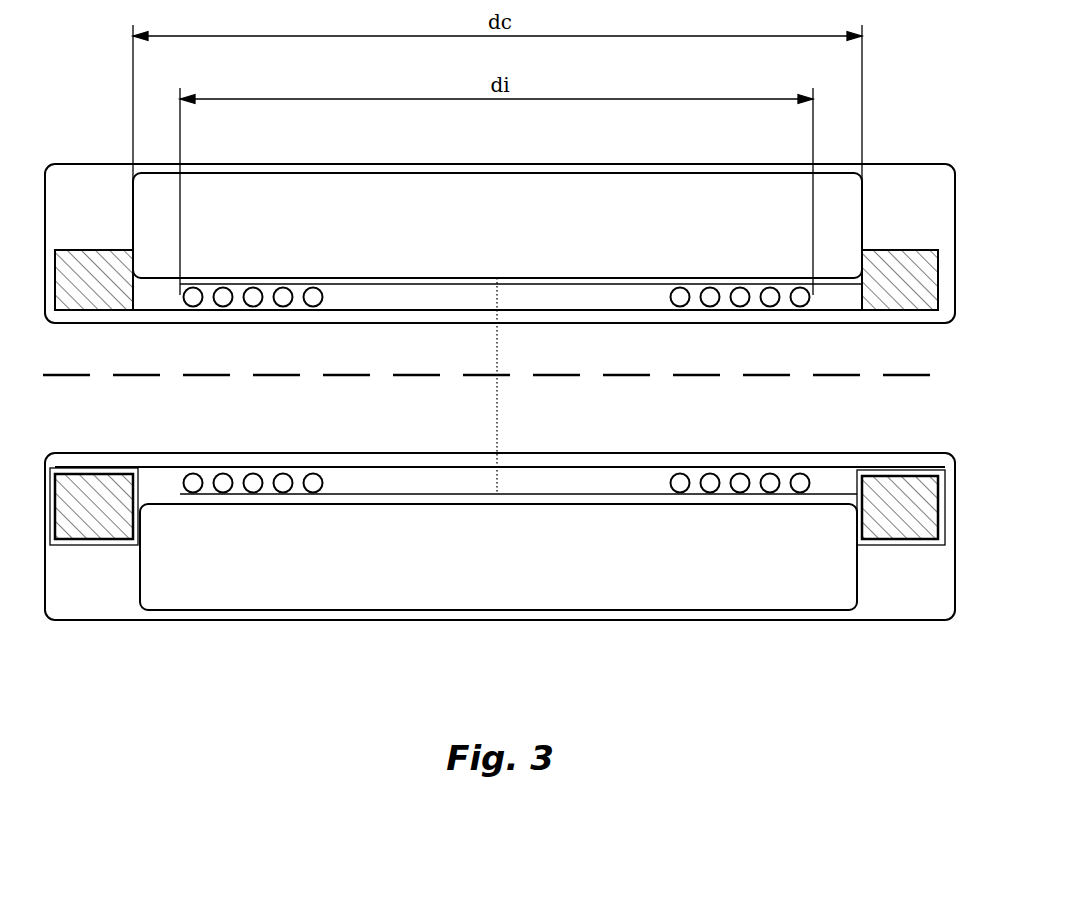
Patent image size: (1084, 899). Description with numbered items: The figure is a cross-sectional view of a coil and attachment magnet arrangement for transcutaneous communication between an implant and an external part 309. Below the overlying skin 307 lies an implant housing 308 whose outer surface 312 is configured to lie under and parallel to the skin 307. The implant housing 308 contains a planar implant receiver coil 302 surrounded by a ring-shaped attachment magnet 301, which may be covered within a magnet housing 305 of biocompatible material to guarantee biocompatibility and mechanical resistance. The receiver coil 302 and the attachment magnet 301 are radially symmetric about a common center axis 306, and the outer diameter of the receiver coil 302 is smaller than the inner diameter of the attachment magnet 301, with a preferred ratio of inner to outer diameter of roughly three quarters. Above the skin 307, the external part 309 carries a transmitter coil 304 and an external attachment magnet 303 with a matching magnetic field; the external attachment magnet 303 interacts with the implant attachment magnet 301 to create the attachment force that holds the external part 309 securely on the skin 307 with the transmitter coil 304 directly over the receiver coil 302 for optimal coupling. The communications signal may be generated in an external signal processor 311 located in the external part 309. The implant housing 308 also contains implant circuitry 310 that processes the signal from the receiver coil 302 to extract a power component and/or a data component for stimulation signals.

The attachment magnet 301 is at (893, 507).
The implant receiver coil 302 is at (740, 483).
The external attachment magnet 303 is at (880, 258).
The transmitter coil 304 is at (770, 295).
The magnet housing 305 is at (887, 543).
The common center axis 306 is at (498, 386).
The skin 307 is at (348, 377).
The implant housing 308 is at (282, 620).
The external part 309 is at (378, 165).
The implant circuitry 310 is at (498, 557).
The external signal processor 311 is at (497, 225).
The outer surface 312 is at (228, 453).